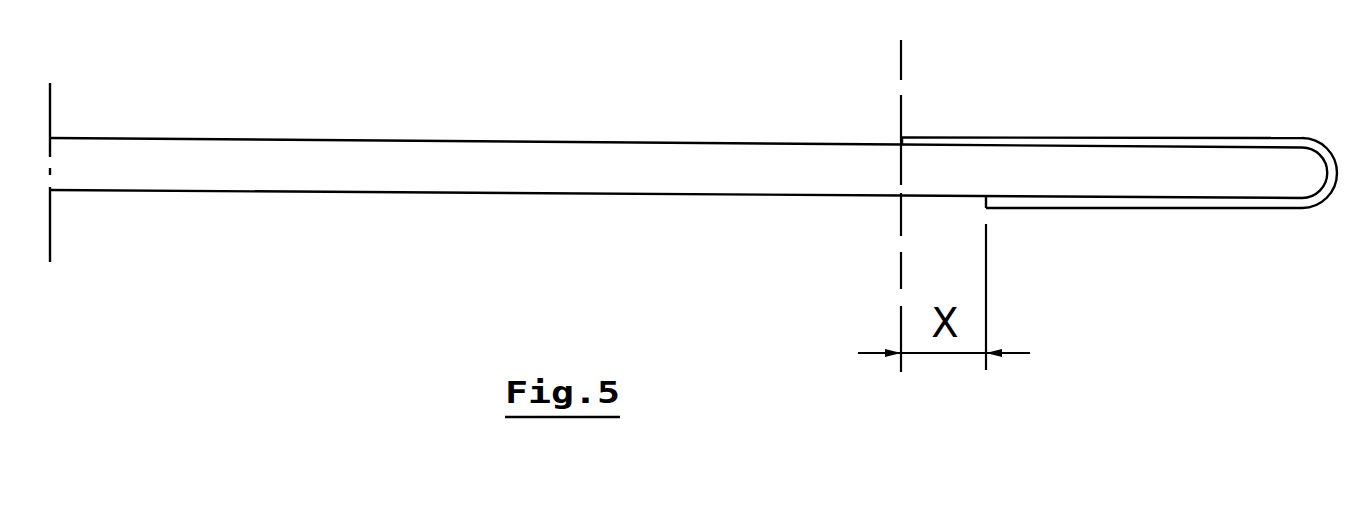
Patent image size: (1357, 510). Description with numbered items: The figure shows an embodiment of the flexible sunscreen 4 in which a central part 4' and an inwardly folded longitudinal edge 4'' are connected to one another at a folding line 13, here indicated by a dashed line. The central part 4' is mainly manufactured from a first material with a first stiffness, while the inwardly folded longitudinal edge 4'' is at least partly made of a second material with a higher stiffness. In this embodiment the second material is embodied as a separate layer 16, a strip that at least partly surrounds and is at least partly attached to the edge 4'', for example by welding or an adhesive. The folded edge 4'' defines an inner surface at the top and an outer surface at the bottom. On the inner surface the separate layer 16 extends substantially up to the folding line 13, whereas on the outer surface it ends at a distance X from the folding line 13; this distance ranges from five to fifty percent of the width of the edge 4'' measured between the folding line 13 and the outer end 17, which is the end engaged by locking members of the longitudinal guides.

The flexible sunscreen 4 is at (688, 151).
The central part 4' is at (476, 151).
The inwardly folded longitudinal edge 4'' is at (1114, 119).
The folding line 13 is at (900, 164).
The separate layer 16 is at (1119, 124).
The outer end 17 is at (1321, 182).